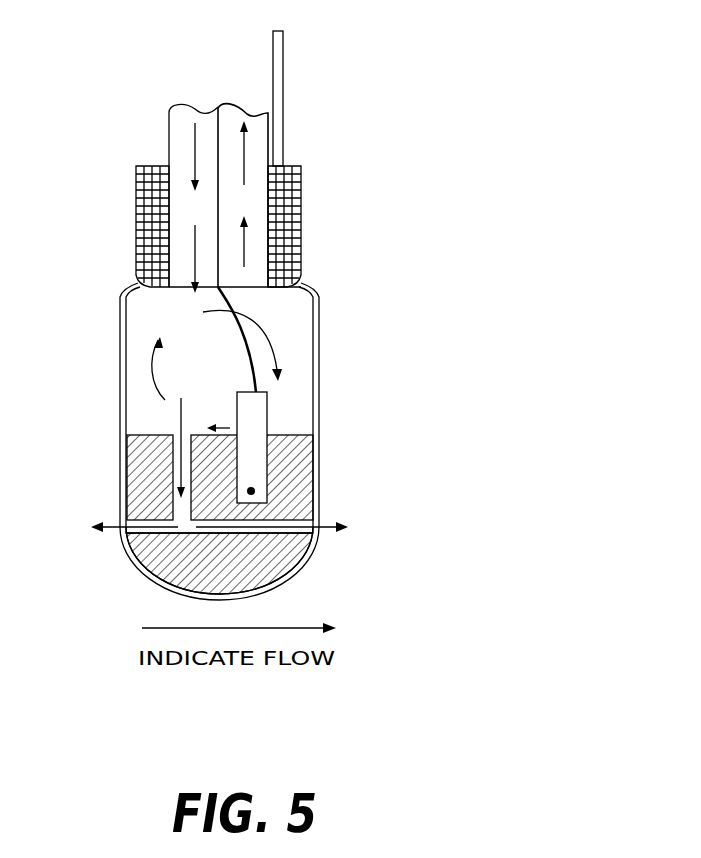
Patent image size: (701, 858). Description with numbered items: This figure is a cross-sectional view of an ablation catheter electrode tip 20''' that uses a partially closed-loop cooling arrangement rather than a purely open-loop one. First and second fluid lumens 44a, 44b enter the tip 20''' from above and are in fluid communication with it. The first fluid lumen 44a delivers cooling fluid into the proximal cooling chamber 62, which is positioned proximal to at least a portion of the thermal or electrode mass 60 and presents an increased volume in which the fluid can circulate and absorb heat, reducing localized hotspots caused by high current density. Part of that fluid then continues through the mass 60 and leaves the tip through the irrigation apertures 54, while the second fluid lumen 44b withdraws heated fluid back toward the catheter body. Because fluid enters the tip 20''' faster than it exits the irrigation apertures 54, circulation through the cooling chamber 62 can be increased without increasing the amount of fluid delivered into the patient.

The tip 20''' is at (314, 315).
The first fluid lumen 44a is at (169, 145).
The second fluid lumen 44b is at (247, 107).
The proximal cooling chamber 62 is at (198, 350).
The thermal or electrode mass 60 is at (292, 480).
The irrigation apertures 54 is at (315, 528).